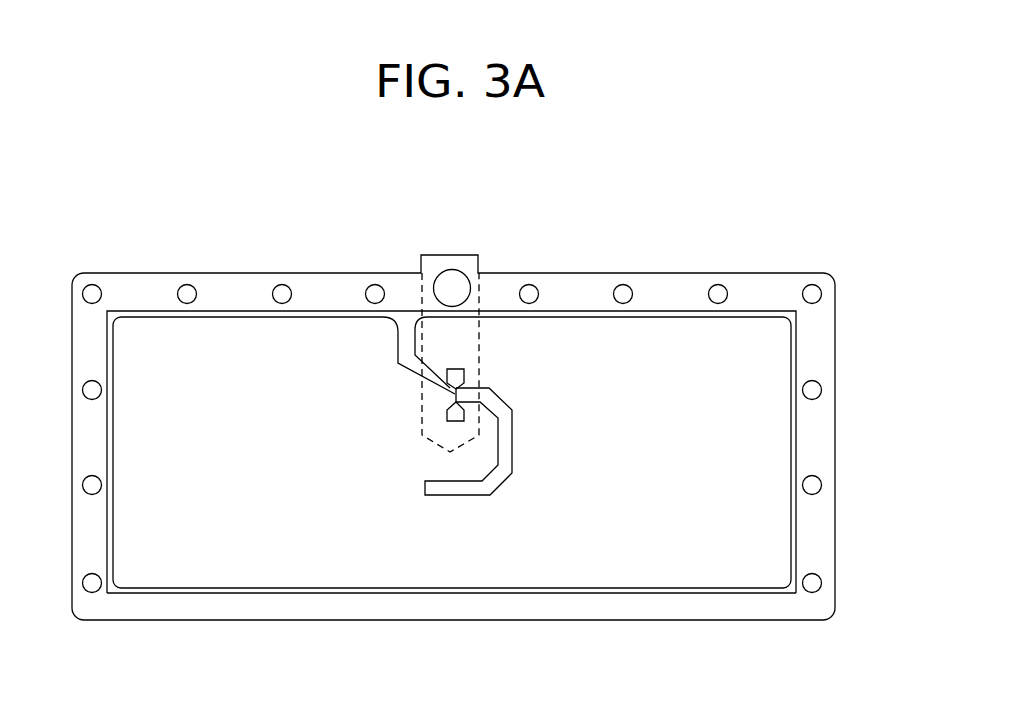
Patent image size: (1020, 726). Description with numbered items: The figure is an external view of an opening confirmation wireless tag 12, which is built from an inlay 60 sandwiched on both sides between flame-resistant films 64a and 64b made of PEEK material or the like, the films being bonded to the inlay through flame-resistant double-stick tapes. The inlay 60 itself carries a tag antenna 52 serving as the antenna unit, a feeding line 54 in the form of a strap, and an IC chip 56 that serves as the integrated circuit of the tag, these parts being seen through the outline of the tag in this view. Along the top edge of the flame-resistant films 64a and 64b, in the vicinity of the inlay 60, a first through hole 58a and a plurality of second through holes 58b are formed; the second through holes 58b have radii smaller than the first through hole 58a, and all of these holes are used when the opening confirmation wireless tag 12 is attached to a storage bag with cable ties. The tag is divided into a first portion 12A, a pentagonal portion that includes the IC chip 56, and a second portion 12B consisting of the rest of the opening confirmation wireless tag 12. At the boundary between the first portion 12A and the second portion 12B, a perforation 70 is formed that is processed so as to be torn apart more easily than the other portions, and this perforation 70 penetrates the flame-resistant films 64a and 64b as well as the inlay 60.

The opening confirmation wireless tag 12 is at (810, 187).
The first portion 12A is at (438, 338).
The second portion 12B is at (128, 419).
The tag antenna 52 is at (654, 560).
The feeding line 54 is at (465, 375).
The IC chip 56 is at (455, 396).
The first through hole 58a is at (452, 270).
The second through holes 58b is at (283, 285).
The inlay 60 is at (741, 599).
The flame-resistant film 64a is at (750, 271).
The flame-resistant film 64b is at (453, 411).
The perforation 70 is at (480, 329).